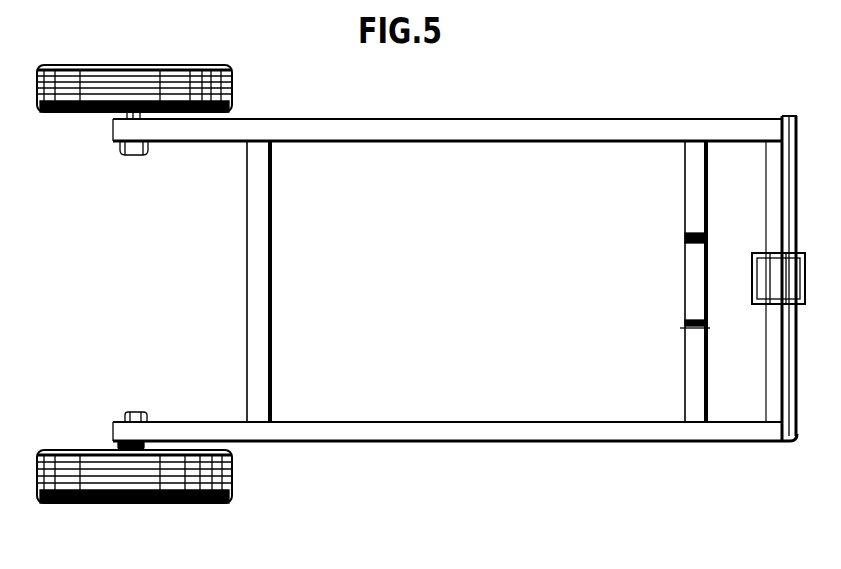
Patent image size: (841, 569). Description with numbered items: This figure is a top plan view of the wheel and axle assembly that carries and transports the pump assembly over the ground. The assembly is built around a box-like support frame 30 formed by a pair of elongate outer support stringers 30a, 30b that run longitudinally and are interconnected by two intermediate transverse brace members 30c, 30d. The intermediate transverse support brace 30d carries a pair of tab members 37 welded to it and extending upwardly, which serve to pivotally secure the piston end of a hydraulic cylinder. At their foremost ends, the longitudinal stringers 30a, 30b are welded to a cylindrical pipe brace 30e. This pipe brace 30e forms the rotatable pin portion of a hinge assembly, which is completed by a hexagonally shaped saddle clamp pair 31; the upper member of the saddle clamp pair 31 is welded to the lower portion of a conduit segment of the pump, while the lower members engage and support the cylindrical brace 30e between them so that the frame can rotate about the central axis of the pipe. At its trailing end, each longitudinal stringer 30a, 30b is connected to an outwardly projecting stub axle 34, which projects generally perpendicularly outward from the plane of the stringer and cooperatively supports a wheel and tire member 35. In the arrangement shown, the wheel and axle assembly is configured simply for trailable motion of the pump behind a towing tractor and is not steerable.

The support frame 30 is at (500, 441).
The outer support stringer 30a is at (373, 433).
The outer support stringer 30b is at (514, 120).
The intermediate transverse brace member 30c is at (272, 333).
The intermediate transverse brace member 30d is at (684, 201).
The cylindrical pipe brace 30e is at (771, 159).
The saddle clamp pair 31 is at (756, 304).
The stub axle 34 is at (135, 448).
The wheel and tire member 35 is at (182, 503).
The tab member 37 is at (715, 223).